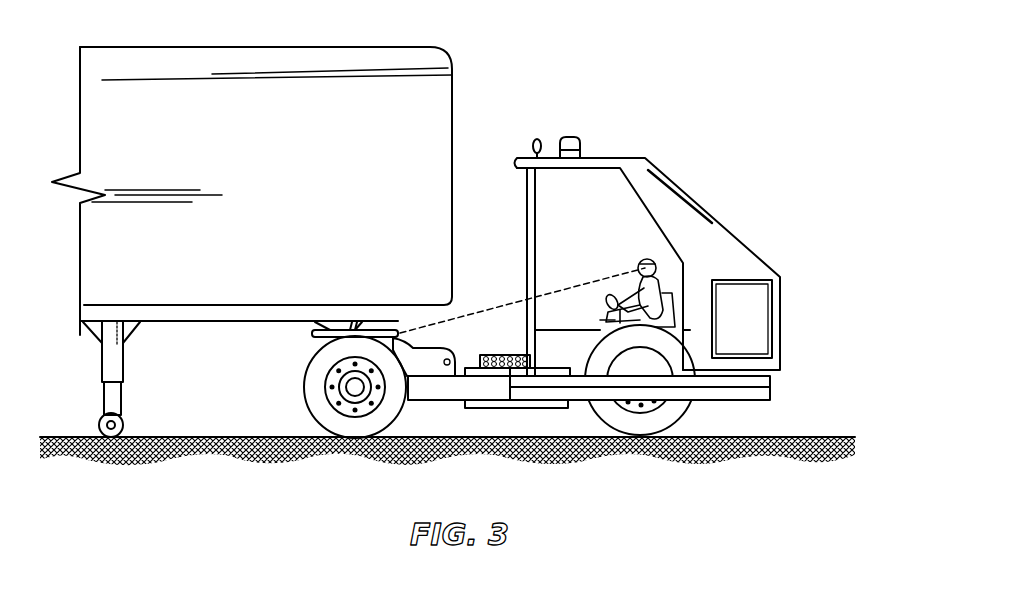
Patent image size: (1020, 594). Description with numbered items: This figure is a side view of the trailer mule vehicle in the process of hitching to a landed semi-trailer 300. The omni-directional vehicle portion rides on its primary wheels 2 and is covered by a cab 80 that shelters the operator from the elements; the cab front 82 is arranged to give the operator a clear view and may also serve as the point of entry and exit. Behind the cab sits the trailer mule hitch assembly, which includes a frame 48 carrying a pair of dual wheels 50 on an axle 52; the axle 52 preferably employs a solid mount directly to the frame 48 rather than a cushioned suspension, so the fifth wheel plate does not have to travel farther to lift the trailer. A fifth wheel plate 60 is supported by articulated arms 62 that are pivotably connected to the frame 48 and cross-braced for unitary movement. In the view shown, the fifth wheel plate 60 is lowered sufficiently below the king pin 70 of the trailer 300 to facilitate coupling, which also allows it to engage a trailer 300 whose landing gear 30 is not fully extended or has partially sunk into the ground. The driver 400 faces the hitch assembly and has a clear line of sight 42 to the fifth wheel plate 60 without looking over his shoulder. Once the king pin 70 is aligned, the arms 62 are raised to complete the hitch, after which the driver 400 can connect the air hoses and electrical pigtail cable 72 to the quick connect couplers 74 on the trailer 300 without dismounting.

The primary wheels 2 is at (685, 402).
The landing gear 30 is at (114, 400).
The line of sight 42 is at (592, 284).
The frame 48 is at (439, 385).
The dual wheels 50 is at (318, 368).
The axle 52 is at (352, 387).
The fifth wheel plate 60 is at (332, 322).
The articulated arms 62 is at (413, 348).
The king pin 70 is at (360, 322).
The air hoses and electrical pigtail cable 72 is at (510, 378).
The quick connect couplers 74 is at (452, 265).
The cab 80 is at (717, 221).
The cab front 82 is at (527, 203).
The trailer 300 is at (438, 102).
The driver 400 is at (647, 258).